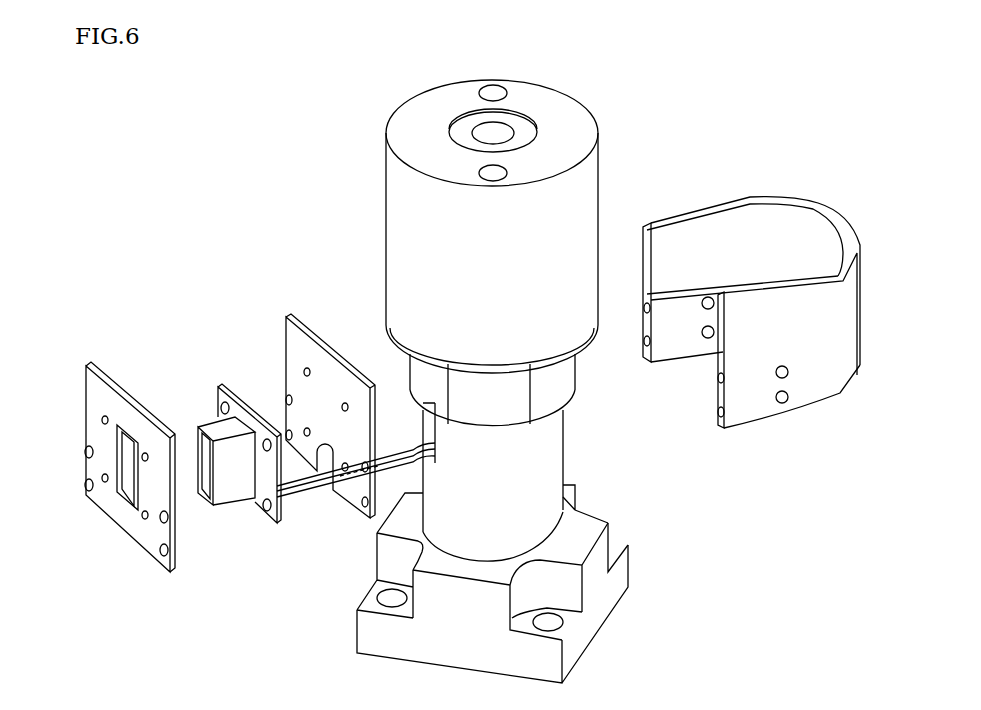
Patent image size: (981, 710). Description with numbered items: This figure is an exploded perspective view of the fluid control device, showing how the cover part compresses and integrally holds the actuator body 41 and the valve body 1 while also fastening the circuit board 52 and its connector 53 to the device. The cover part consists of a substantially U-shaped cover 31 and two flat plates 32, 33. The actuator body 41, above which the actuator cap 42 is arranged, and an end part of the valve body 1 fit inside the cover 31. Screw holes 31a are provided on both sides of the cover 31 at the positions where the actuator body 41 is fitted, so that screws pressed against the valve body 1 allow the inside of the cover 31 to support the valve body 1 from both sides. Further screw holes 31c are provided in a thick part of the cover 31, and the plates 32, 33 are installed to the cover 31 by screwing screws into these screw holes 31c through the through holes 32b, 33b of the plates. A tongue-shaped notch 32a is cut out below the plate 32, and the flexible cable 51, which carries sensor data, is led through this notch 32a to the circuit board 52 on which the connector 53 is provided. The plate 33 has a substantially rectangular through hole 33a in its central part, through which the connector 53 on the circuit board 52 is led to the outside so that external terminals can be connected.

The valve body 1 is at (628, 552).
The cover 31 is at (838, 208).
The screw holes 31a is at (710, 305).
The screw holes 31c is at (648, 342).
The plate 32 is at (287, 317).
The notch 32a is at (344, 463).
The through holes 32b is at (292, 402).
The plate 33 is at (86, 366).
The through hole 33a is at (117, 493).
The through holes 33b is at (86, 451).
The actuator body 41 is at (575, 382).
The actuator cap 42 is at (386, 175).
The flexible cable 51 is at (413, 447).
The circuit board 52 is at (268, 514).
The connector 53 is at (205, 425).